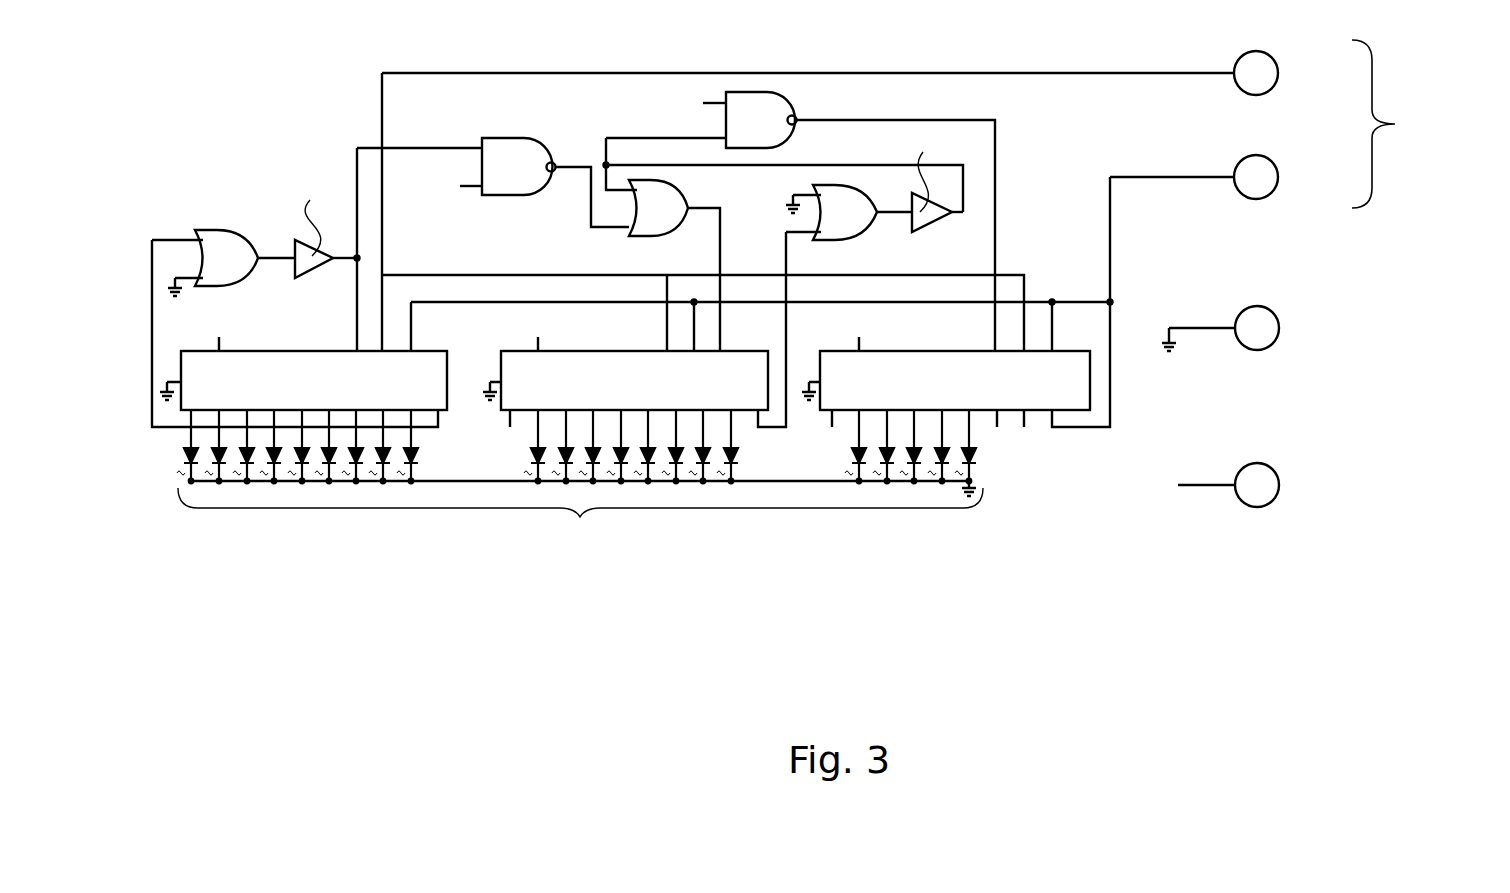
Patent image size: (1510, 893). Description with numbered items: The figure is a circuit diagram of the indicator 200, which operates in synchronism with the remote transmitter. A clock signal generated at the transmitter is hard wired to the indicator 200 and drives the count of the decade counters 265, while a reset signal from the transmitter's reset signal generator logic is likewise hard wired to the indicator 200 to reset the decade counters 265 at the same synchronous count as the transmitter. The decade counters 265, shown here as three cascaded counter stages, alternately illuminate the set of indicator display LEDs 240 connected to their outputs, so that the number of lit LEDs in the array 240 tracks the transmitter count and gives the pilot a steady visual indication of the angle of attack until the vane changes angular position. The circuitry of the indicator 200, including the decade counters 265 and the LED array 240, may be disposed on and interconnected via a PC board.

The indicator 200 is at (250, 137).
The indicator display LEDs 240 is at (580, 518).
The decade counters 265 is at (340, 396).